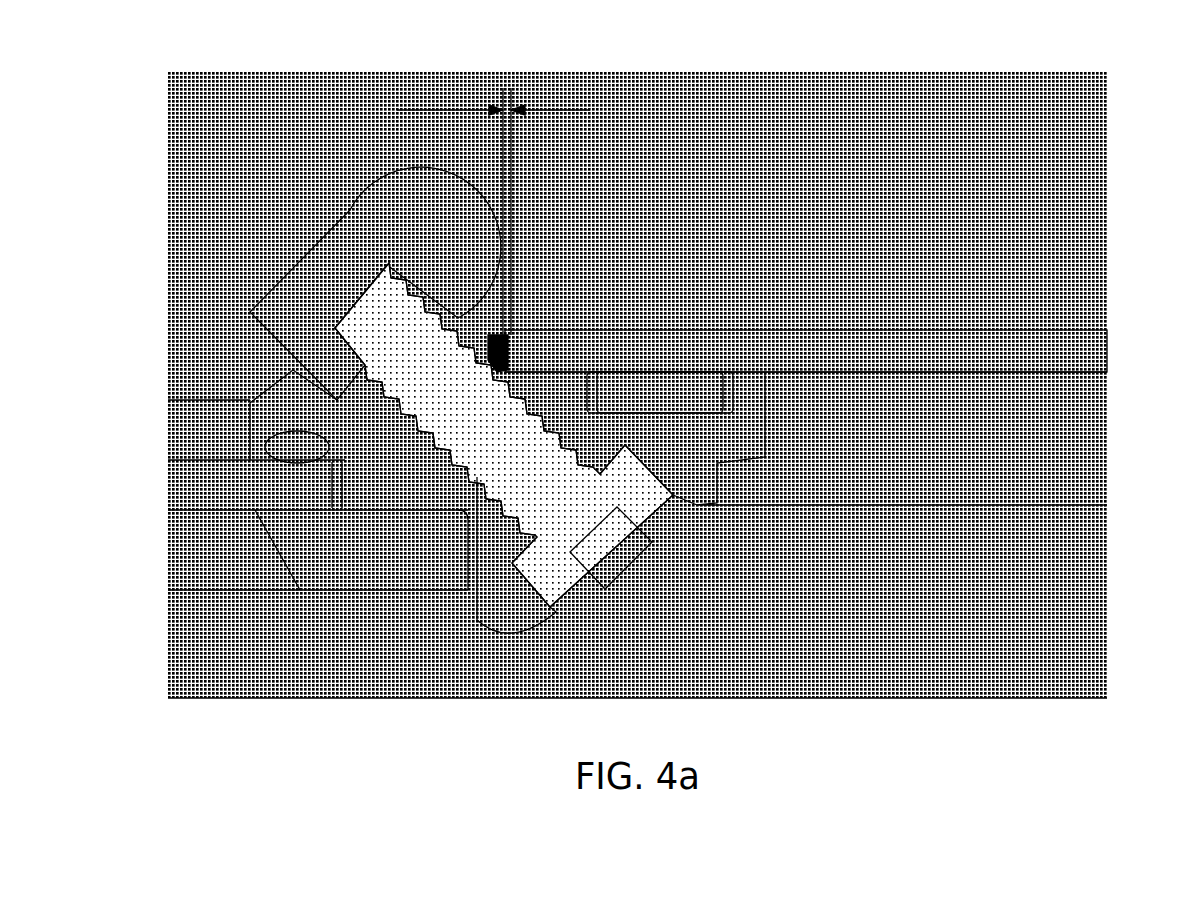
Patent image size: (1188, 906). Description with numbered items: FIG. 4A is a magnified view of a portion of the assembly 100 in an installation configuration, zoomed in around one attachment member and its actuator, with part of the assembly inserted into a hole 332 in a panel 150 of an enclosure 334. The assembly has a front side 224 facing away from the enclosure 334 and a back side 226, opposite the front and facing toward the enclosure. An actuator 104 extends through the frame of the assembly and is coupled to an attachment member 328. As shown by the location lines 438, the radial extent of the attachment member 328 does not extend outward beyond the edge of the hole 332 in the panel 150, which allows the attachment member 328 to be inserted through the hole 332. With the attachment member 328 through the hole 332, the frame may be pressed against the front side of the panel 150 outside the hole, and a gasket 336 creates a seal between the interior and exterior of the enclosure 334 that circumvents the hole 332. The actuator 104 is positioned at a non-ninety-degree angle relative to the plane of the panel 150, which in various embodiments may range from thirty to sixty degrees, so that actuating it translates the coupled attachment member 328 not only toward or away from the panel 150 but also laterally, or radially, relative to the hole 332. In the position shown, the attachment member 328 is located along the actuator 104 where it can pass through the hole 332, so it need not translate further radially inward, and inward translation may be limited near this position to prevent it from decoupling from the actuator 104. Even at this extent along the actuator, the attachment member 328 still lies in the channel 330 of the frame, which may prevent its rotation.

The assembly 100 is at (251, 200).
The actuator 104 is at (380, 333).
The panel 150 is at (1058, 340).
The front side 224 is at (260, 667).
The back side 226 is at (237, 270).
The attachment member 328 is at (373, 193).
The channel 330 is at (393, 430).
The hole 332 is at (508, 335).
The enclosure 334 is at (637, 201).
The gasket 336 is at (672, 400).
The location lines 438 is at (516, 95).